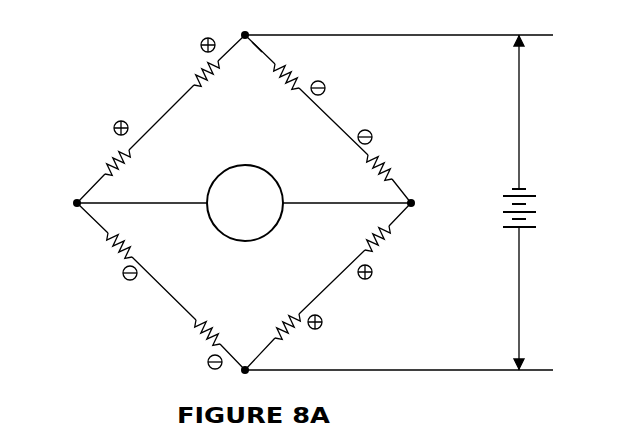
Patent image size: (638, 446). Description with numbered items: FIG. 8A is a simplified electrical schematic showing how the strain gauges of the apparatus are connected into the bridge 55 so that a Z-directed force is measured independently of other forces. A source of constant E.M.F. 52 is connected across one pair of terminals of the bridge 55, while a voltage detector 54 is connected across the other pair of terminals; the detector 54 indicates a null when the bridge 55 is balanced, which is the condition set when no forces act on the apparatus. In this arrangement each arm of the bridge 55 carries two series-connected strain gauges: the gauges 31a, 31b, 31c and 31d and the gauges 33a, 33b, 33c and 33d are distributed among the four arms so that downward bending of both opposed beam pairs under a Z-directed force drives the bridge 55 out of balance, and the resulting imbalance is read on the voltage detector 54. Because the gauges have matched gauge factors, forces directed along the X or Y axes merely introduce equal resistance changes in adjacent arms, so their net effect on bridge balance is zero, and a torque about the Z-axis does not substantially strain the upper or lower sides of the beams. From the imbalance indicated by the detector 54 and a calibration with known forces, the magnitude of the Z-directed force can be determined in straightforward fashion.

The strain gauge 31a is at (213, 85).
The strain gauge 31b is at (391, 252).
The strain gauge 31c is at (110, 152).
The strain gauge 31d is at (300, 335).
The strain gauge 33a is at (114, 256).
The strain gauge 33b is at (283, 87).
The strain gauge 33c is at (202, 332).
The strain gauge 33d is at (390, 170).
The source of constant E.M.F. 52 is at (528, 230).
The voltage detector 54 is at (265, 218).
The bridge 55 is at (273, 59).